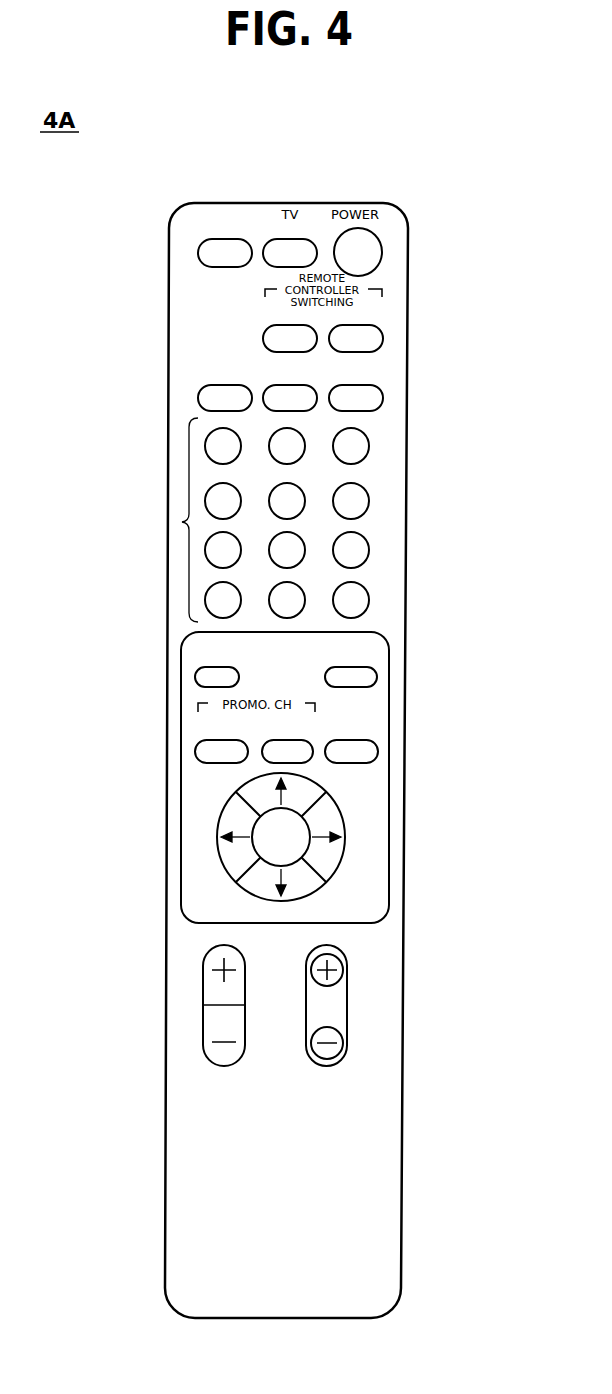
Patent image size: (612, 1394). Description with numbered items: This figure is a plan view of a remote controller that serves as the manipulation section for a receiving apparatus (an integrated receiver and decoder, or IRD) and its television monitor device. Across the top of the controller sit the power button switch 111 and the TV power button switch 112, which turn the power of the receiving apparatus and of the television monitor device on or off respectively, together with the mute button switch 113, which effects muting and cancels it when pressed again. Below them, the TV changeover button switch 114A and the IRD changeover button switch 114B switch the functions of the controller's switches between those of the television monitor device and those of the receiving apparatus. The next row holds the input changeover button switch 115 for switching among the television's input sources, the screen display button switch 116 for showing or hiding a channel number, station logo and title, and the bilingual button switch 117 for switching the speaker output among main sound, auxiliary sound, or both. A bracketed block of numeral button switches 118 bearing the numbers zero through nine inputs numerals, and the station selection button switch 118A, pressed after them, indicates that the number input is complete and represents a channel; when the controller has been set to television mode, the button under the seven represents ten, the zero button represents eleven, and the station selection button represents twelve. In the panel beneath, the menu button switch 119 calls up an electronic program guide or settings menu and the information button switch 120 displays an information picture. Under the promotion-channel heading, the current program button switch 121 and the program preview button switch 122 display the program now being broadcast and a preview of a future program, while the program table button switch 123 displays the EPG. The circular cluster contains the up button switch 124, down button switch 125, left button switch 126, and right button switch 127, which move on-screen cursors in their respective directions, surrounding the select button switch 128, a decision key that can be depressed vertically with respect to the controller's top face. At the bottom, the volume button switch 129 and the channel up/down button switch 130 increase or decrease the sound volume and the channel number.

The power button switch 111 is at (382, 252).
The TV power button switch 112 is at (318, 252).
The mute button switch 113 is at (198, 253).
The TV changeover button switch 114A is at (263, 338).
The IRD changeover button switch 114B is at (383, 338).
The input changeover button switch 115 is at (198, 398).
The screen display button switch 116 is at (307, 412).
The bilingual button switch 117 is at (383, 398).
The numeral button switches 118 is at (182, 522).
The station selection button switch 118A is at (369, 600).
The menu button switch 119 is at (195, 677).
The information button switch 120 is at (377, 677).
The current program button switch 121 is at (195, 755).
The program preview button switch 122 is at (300, 763).
The program table button switch 123 is at (378, 752).
The up button switch 124 is at (250, 789).
The down button switch 125 is at (302, 885).
The left button switch 126 is at (228, 857).
The right button switch 127 is at (332, 858).
The select button switch 128 is at (300, 823).
The volume button switch 129 is at (203, 985).
The channel up/down button switch 130 is at (347, 1007).